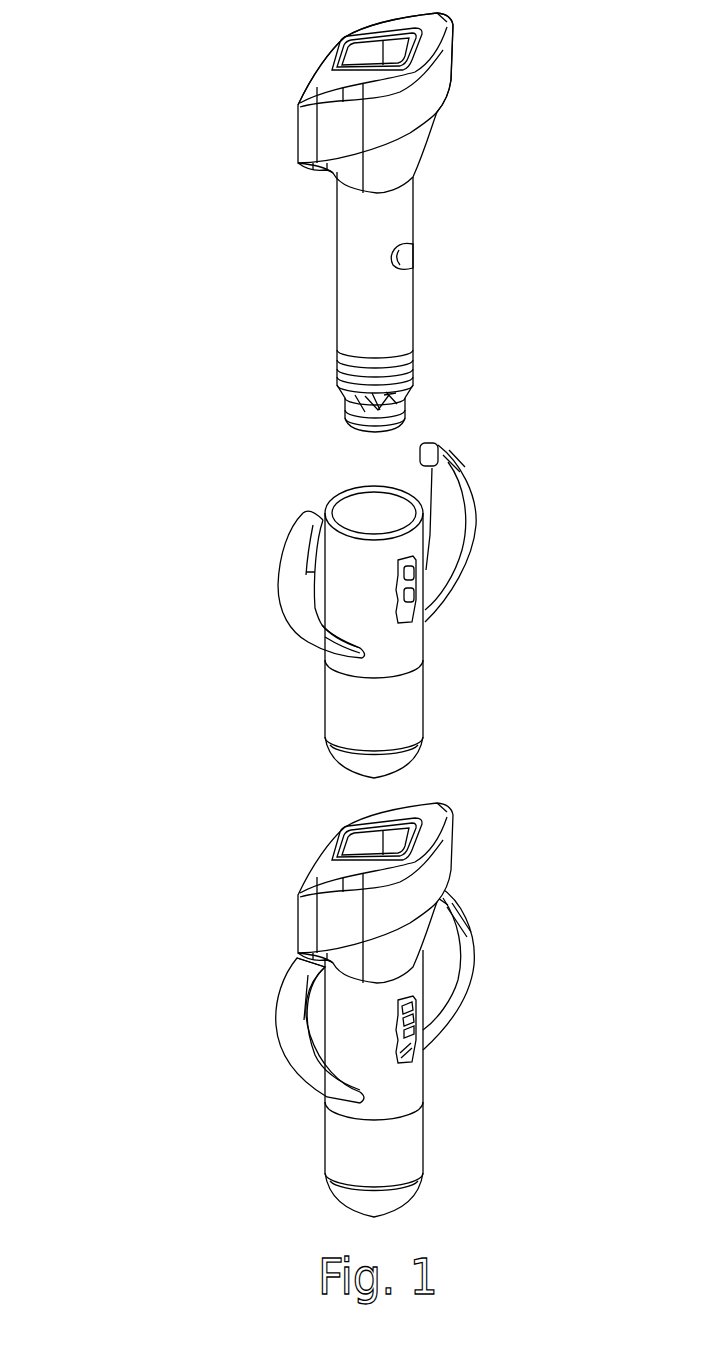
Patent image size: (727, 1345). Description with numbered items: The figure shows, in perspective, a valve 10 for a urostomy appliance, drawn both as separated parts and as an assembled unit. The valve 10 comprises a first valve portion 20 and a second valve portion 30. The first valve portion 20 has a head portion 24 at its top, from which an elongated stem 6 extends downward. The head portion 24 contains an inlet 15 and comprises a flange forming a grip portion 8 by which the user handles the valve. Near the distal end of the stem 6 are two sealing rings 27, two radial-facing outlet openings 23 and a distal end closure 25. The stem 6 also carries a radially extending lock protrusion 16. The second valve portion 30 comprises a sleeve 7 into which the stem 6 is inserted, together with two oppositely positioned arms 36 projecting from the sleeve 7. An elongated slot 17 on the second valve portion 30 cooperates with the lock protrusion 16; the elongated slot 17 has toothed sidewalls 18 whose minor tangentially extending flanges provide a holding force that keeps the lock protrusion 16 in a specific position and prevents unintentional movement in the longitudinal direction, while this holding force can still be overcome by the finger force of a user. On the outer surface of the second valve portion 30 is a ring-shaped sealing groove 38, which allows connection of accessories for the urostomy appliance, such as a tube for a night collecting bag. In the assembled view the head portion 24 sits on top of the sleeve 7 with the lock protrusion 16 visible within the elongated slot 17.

The valve 10 is at (152, 921).
The first valve portion 20 is at (152, 148).
The second valve portion 30 is at (152, 633).
The stem 6 is at (345, 242).
The sleeve 7 is at (353, 693).
The grip portion 8 is at (305, 130).
The inlet 15 is at (362, 57).
The lock protrusion 16 is at (410, 258).
The elongated slot 17 is at (400, 612).
The toothed sidewalls 18 is at (410, 576).
The radial-facing outlet openings 23 is at (405, 418).
The head portion 24 is at (415, 118).
The distal end closure 25 is at (370, 430).
The sealing rings 27 is at (410, 362).
The arms 36 is at (292, 580).
The ring-shaped sealing groove 38 is at (425, 738).